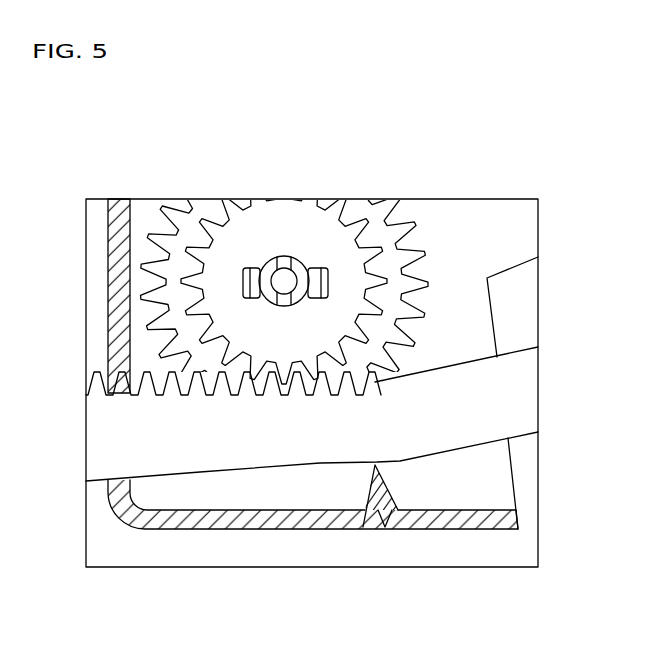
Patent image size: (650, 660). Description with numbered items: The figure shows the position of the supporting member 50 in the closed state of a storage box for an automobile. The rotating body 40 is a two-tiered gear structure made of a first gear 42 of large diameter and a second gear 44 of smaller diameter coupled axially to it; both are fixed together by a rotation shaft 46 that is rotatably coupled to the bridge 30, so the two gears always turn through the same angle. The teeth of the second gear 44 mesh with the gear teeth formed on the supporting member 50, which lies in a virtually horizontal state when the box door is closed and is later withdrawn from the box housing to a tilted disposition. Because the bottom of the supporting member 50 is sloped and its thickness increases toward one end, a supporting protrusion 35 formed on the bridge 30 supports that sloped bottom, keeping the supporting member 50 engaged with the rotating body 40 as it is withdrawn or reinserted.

The bridge 30 is at (173, 516).
The supporting protrusion 35 is at (366, 484).
The rotating body 40 is at (413, 135).
The first gear 42 is at (381, 236).
The second gear 44 is at (342, 247).
The rotation shaft 46 is at (262, 278).
The supporting member 50 is at (450, 423).